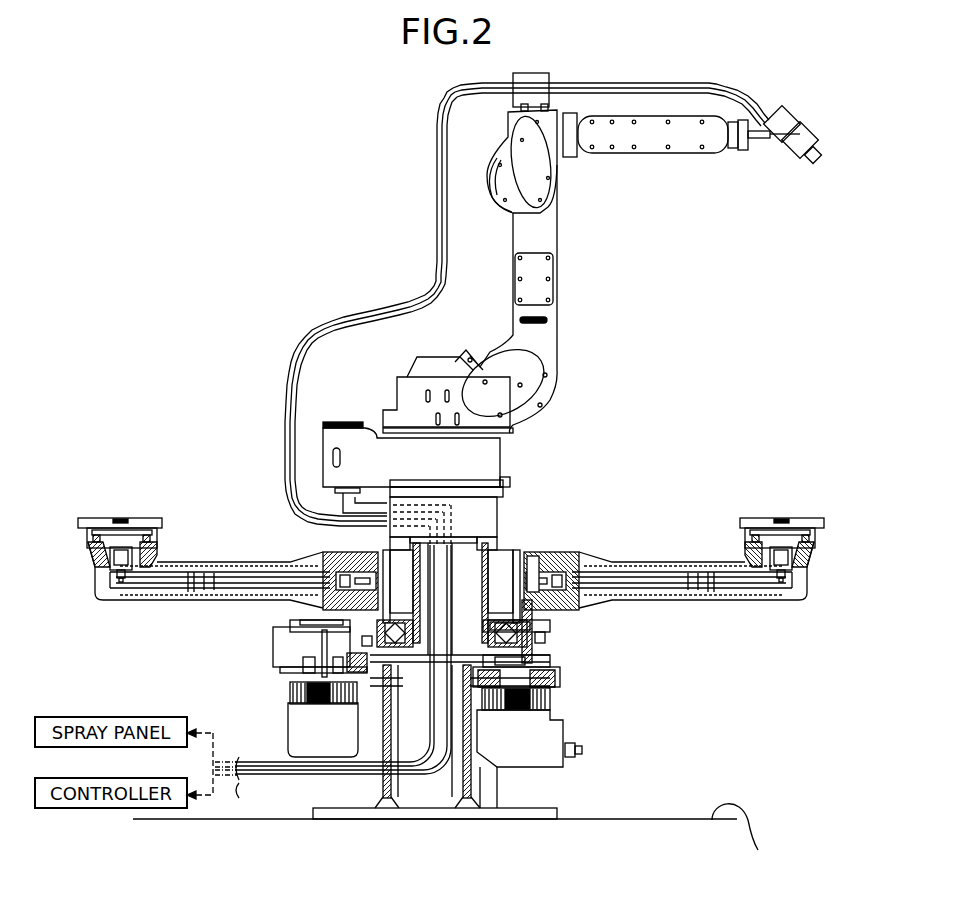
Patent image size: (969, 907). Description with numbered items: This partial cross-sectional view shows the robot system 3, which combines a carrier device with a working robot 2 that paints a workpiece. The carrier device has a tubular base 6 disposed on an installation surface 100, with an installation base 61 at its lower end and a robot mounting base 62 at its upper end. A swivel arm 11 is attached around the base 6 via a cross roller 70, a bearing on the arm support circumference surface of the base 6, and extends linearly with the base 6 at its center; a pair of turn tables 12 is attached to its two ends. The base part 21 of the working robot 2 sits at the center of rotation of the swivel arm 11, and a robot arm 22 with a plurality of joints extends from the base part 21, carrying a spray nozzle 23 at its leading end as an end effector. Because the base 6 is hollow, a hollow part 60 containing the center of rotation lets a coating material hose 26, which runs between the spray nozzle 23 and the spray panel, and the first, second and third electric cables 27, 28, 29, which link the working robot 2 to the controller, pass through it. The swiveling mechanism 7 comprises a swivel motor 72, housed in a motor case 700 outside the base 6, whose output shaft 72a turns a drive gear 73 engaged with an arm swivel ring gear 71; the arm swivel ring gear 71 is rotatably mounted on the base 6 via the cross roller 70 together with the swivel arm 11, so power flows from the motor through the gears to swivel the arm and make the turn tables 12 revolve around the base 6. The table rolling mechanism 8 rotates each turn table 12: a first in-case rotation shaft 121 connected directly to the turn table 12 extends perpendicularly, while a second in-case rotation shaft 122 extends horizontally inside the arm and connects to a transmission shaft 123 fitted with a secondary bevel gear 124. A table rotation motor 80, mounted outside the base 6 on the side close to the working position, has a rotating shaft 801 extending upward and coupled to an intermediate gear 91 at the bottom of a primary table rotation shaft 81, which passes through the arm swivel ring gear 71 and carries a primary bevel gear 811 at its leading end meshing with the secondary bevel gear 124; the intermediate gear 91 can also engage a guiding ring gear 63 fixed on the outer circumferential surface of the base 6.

The working robot 2 is at (574, 278).
The robot system 3 is at (312, 150).
The base 6 is at (508, 787).
The swiveling mechanism 7 is at (181, 675).
The table rolling mechanism 8 is at (642, 702).
The swivel arm 11 is at (223, 553).
The turn table 12 is at (95, 517).
The base part 21 is at (397, 400).
The robot arm 22 is at (657, 148).
The spray nozzle 23 is at (813, 130).
The coating material hose 26 is at (308, 325).
The first electric cable 27 is at (310, 347).
The second electric cable 28 is at (268, 777).
The third electric cable 29 is at (308, 788).
The hollow part 60 is at (420, 745).
The installation base 61 is at (550, 810).
The robot mounting base 62 is at (502, 462).
The guiding ring gear 63 is at (487, 650).
The cross roller 70 is at (402, 657).
The arm swivel ring gear 71 is at (550, 623).
The swivel motor 72 is at (293, 690).
The output shaft 72a is at (322, 640).
The drive gear 73 is at (290, 625).
The table rotation motor 80 is at (550, 705).
The primary table rotation shaft 81 is at (365, 640).
The intermediate gear 91 is at (550, 653).
The installation surface 100 is at (455, 840).
The first in-case rotation shaft 121 is at (112, 571).
The second in-case rotation shaft 122 is at (145, 582).
The transmission shaft 123 is at (340, 570).
The secondary bevel gear 124 is at (530, 567).
The motor case 700 is at (288, 728).
The rotating shaft 801 is at (553, 688).
The primary bevel gear 811 is at (520, 552).